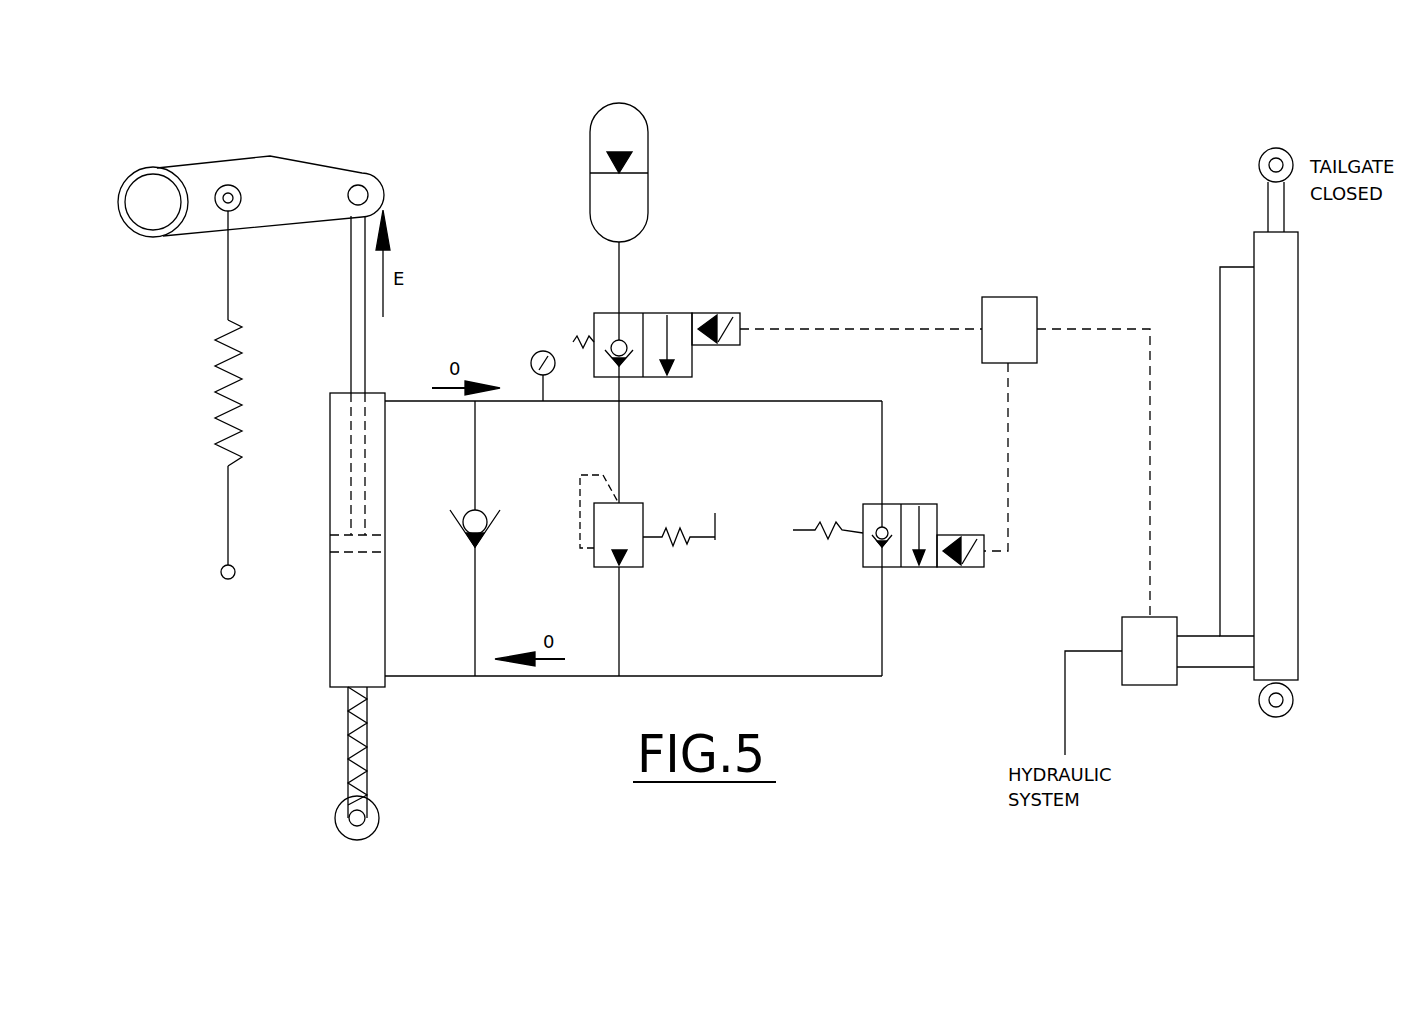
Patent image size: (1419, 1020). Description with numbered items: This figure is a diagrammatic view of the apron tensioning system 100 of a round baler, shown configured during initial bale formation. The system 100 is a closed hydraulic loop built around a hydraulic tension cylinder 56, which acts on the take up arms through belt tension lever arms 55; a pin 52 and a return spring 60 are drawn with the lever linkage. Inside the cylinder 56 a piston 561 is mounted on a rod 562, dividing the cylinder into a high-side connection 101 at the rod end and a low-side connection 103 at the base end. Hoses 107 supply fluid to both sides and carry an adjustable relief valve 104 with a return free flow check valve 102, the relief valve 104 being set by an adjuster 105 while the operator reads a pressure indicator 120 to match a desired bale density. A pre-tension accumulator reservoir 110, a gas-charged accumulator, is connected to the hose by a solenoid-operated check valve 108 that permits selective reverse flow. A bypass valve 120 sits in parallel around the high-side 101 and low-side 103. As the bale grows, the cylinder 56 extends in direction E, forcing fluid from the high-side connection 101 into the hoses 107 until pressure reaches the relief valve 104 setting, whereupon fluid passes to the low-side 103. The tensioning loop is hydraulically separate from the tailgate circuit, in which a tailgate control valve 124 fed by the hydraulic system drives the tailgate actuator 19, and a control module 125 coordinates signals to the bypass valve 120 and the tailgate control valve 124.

The apron tensioning system 100 is at (475, 158).
The pivot pin 52 is at (147, 185).
The belt tension lever arm 55 is at (223, 158).
The rod 562 is at (350, 295).
The return spring 60 is at (215, 443).
The hydraulic tension cylinder 56 is at (330, 645).
The piston 561 is at (355, 560).
The high-side connection 101 is at (385, 402).
The low-side connection 103 is at (385, 688).
The hoses 107 is at (508, 402).
The return free flow check valve 102 is at (486, 546).
The pre-tension accumulator reservoir 110 is at (650, 165).
The solenoid-operated check valve 108 is at (648, 288).
The adjustable relief valve 104 is at (628, 568).
The adjuster 105 is at (715, 540).
The pressure indicator / bypass valve 120 is at (532, 354).
The control module 125 is at (987, 297).
The tailgate control valve 124 is at (1145, 686).
The tailgate actuator 19 is at (1298, 455).